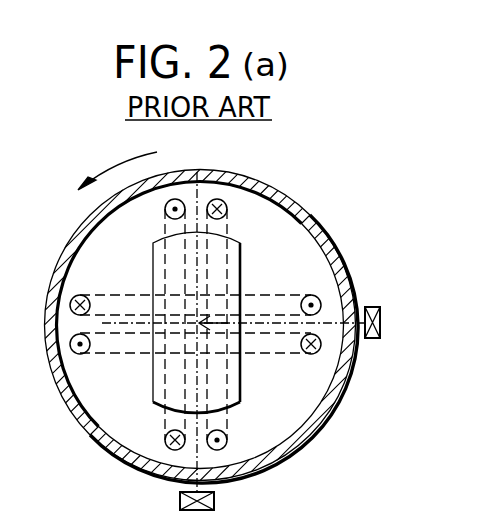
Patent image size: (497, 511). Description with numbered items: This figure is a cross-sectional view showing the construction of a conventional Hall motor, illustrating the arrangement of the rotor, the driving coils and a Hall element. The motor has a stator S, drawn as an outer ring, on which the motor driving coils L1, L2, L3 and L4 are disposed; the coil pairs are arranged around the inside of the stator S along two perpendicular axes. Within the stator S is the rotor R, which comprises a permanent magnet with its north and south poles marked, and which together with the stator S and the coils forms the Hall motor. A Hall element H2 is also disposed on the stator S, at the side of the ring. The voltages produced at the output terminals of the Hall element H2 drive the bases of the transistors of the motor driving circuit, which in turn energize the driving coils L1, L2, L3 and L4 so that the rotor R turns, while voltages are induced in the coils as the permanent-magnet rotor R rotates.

The stator S is at (293, 203).
The rotor R is at (241, 390).
The driving coil L1 is at (167, 450).
The driving coil L2 is at (307, 296).
The driving coil L3 is at (228, 450).
The driving coil L4 is at (306, 355).
The Hall element H2 is at (371, 306).